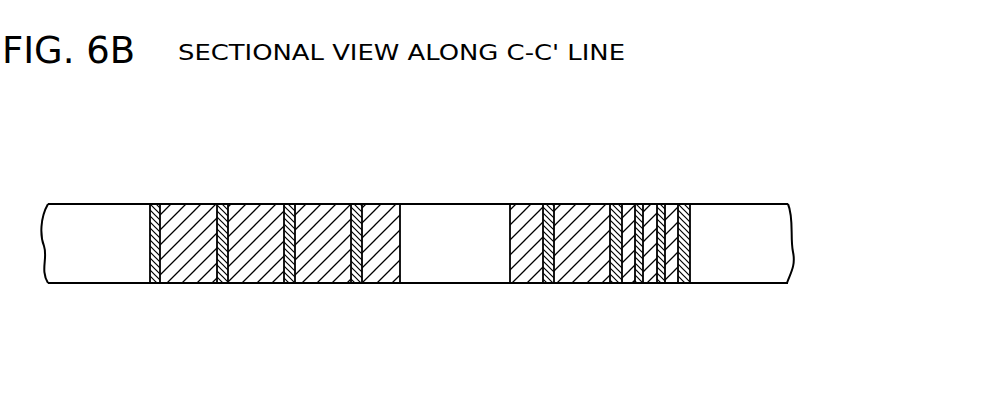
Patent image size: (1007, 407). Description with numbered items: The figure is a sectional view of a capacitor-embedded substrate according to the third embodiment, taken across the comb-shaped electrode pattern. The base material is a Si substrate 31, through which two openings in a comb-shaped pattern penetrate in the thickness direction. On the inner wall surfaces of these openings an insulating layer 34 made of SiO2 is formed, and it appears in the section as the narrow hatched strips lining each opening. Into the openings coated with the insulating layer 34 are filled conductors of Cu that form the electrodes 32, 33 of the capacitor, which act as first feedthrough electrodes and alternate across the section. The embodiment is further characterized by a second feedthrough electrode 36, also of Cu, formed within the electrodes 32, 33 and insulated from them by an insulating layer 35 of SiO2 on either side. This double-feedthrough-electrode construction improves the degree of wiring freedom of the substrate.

The Si substrate 31 is at (97, 264).
The electrode 32 is at (190, 270).
The electrode 33 is at (255, 268).
The insulating layer 34 is at (155, 203).
The insulating layer 35 is at (662, 203).
The second feedthrough electrode 36 is at (650, 270).